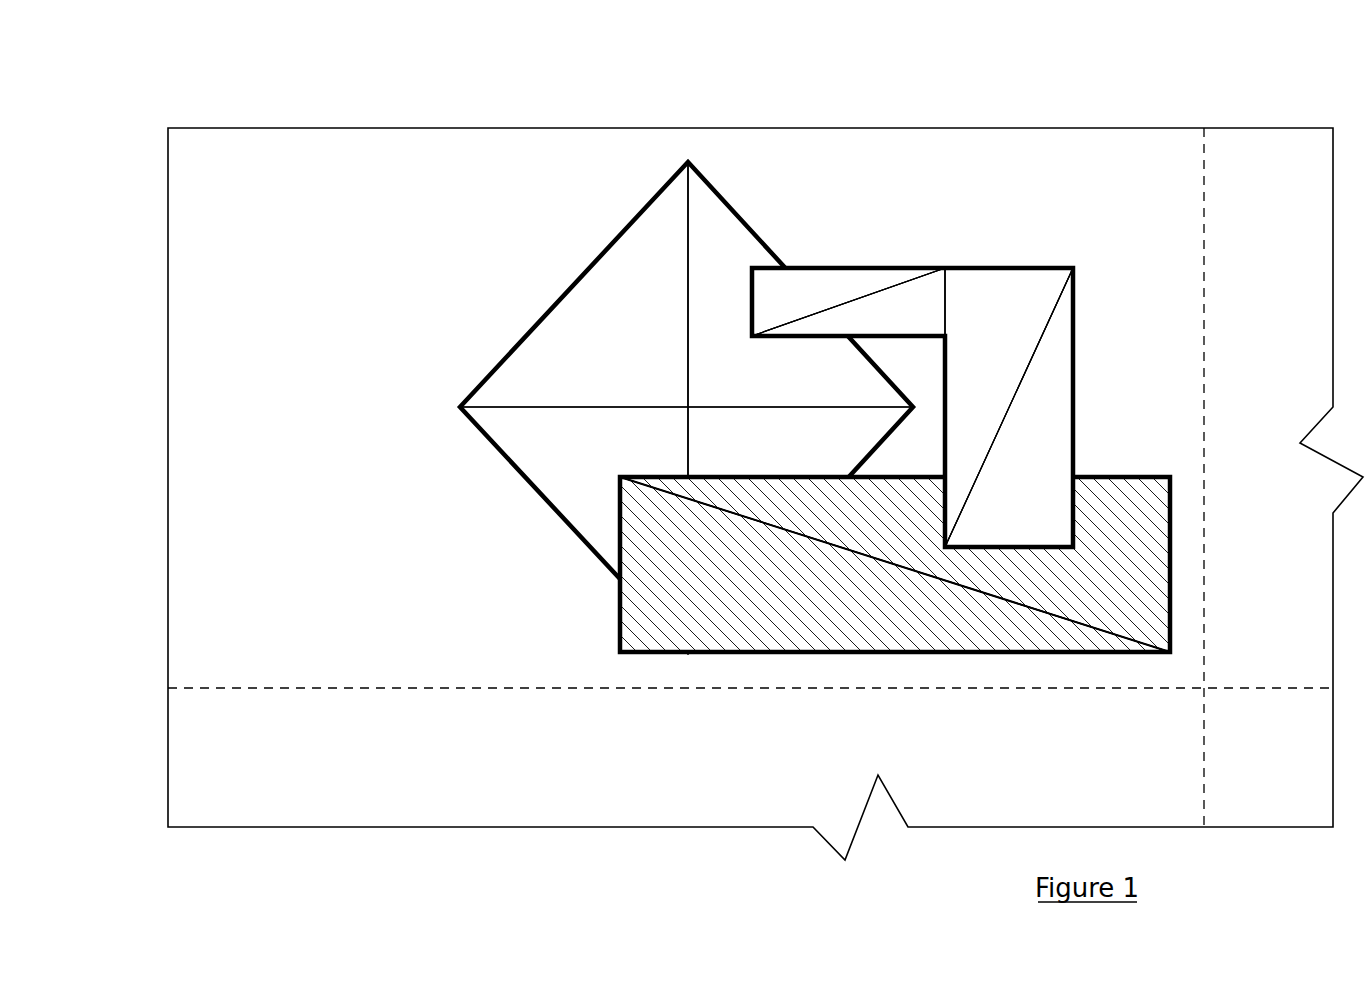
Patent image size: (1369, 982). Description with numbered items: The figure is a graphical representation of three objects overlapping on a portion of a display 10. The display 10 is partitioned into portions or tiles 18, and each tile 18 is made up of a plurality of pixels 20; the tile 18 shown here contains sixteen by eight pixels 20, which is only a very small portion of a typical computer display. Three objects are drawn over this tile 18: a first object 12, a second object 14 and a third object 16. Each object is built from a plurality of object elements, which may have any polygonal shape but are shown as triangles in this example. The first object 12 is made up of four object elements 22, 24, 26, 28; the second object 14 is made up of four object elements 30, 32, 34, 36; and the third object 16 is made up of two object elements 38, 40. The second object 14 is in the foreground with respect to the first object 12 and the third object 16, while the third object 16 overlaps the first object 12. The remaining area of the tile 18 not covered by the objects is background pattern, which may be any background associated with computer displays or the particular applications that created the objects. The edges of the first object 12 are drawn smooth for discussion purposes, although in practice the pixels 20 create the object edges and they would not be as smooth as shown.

The display 10 is at (1083, 122).
The object #1 12 is at (590, 260).
The object #2 14 is at (1085, 337).
The object #3 16 is at (960, 660).
The tile 18 is at (571, 695).
The pixel 20 is at (282, 156).
The object element 22 is at (574, 284).
The object element 24 is at (800, 284).
The object element 26 is at (574, 529).
The object element 28 is at (800, 529).
The object element 30 is at (800, 246).
The object element 32 is at (920, 232).
The object element 34 is at (1009, 407).
The object element 36 is at (1009, 407).
The object element 38 is at (895, 564).
The object element 40 is at (895, 564).